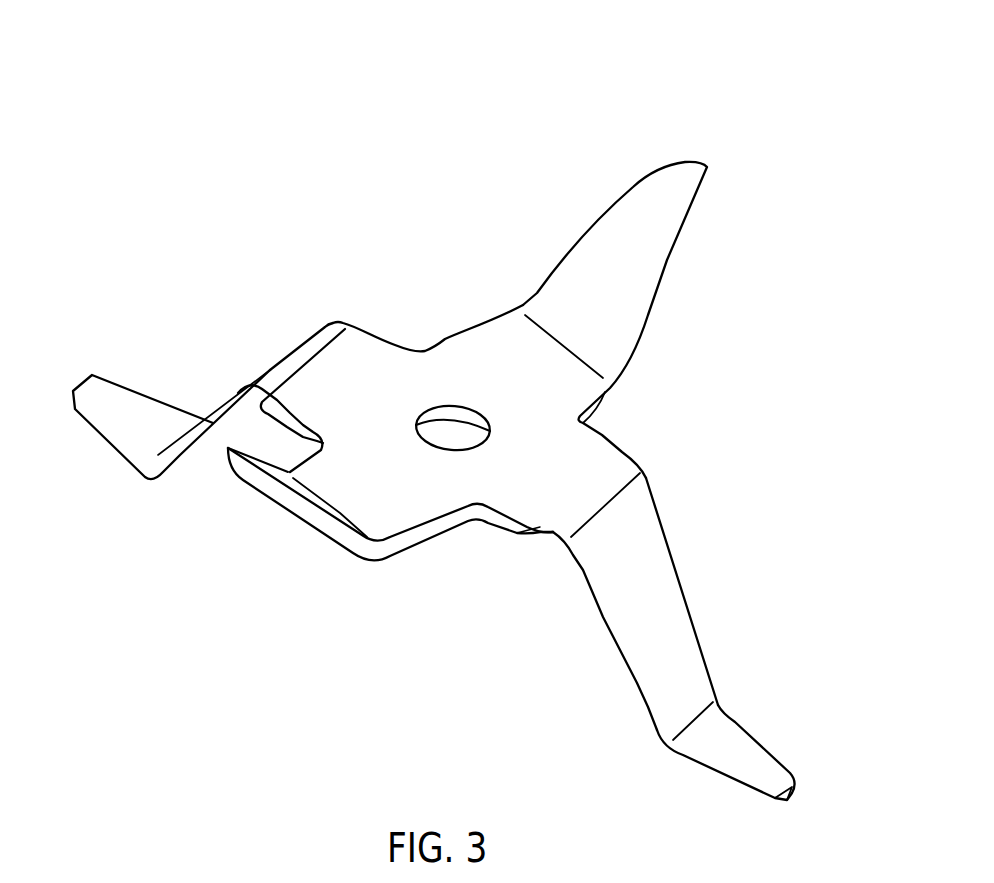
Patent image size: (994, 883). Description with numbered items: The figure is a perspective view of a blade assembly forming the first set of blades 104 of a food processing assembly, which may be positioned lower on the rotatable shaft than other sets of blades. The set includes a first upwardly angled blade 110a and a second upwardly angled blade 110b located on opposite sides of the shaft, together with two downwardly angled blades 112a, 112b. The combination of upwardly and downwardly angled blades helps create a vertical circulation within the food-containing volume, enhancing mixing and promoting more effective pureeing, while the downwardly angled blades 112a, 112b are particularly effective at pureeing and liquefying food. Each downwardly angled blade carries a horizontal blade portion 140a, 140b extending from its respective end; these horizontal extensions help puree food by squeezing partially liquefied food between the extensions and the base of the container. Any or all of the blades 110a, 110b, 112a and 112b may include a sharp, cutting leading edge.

The first set of blades 104 is at (434, 424).
The first upwardly angled blade 110a is at (288, 502).
The second upwardly angled blade 110b is at (647, 263).
The downwardly angled blade 112a is at (224, 422).
The downwardly angled blade 112b is at (626, 618).
The horizontal blade portion 140a is at (147, 440).
The horizontal blade portion 140b is at (725, 753).